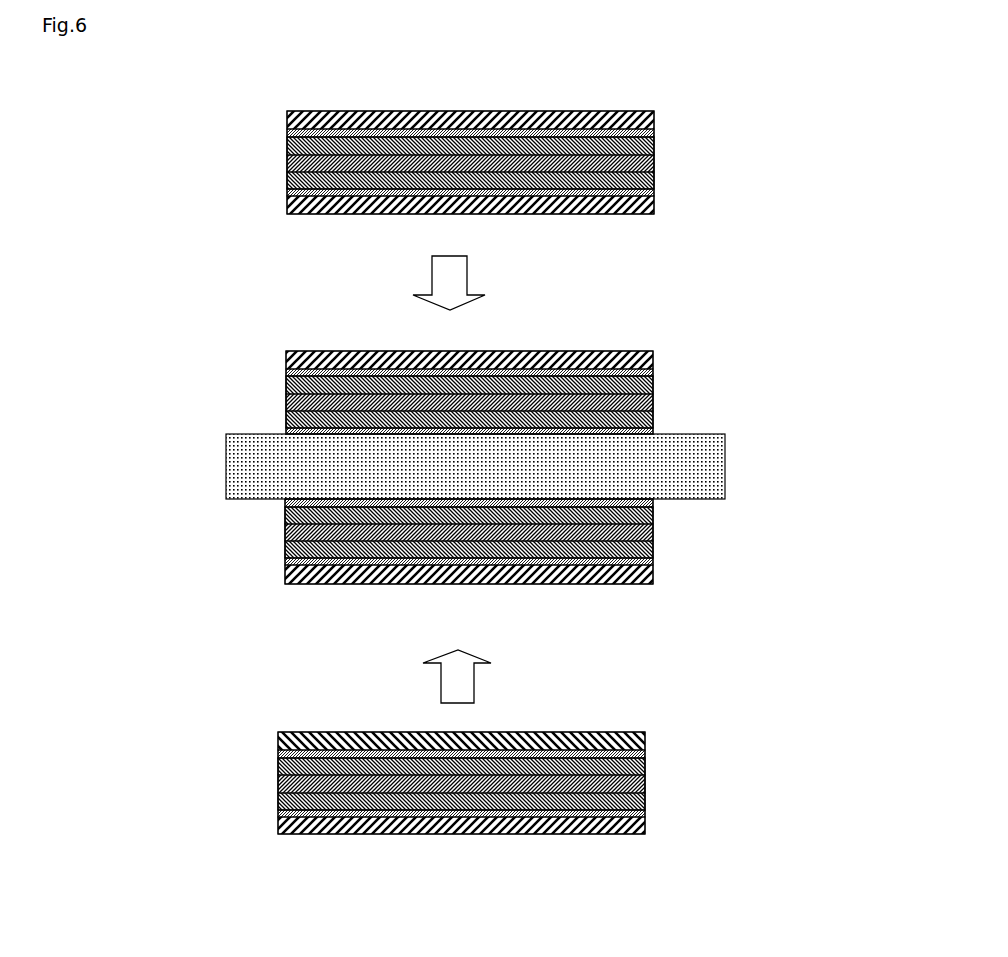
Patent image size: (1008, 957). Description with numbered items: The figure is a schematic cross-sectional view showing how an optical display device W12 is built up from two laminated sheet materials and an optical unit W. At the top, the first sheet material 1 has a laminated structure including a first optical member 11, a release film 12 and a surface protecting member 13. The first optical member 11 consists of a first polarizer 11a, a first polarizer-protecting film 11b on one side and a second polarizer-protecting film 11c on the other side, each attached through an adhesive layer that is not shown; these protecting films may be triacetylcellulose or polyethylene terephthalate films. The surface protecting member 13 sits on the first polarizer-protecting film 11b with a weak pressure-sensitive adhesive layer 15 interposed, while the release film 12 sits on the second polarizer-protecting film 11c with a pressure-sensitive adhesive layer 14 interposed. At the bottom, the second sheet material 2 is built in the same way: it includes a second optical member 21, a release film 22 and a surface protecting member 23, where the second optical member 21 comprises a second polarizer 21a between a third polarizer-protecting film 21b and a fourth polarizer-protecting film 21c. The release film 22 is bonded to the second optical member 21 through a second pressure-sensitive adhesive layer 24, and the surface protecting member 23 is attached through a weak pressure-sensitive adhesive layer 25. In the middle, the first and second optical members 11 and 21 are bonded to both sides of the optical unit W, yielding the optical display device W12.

The first sheet material 1 is at (598, 95).
The second sheet material 2 is at (298, 858).
The first optical member 11 is at (175, 108).
The first polarizer 11a is at (287, 163).
The first polarizer-protecting film 11b is at (287, 147).
The second polarizer-protecting film 11c is at (287, 180).
The release film 12 is at (654, 205).
The surface protecting member 13 is at (654, 120).
The pressure-sensitive adhesive layer 14 is at (287, 192).
The weak pressure-sensitive adhesive layer 15 is at (654, 133).
The second optical member 21 is at (175, 525).
The second polarizer 21a is at (285, 532).
The third polarizer-protecting film 21b is at (285, 549).
The fourth polarizer-protecting film 21c is at (285, 515).
The release film 22 is at (645, 740).
The surface protecting member 23 is at (285, 575).
The second pressure-sensitive adhesive layer 24 is at (285, 503).
The weak pressure-sensitive adhesive layer 25 is at (285, 561).
The optical unit W is at (725, 466).
The optical display device W12 is at (641, 325).